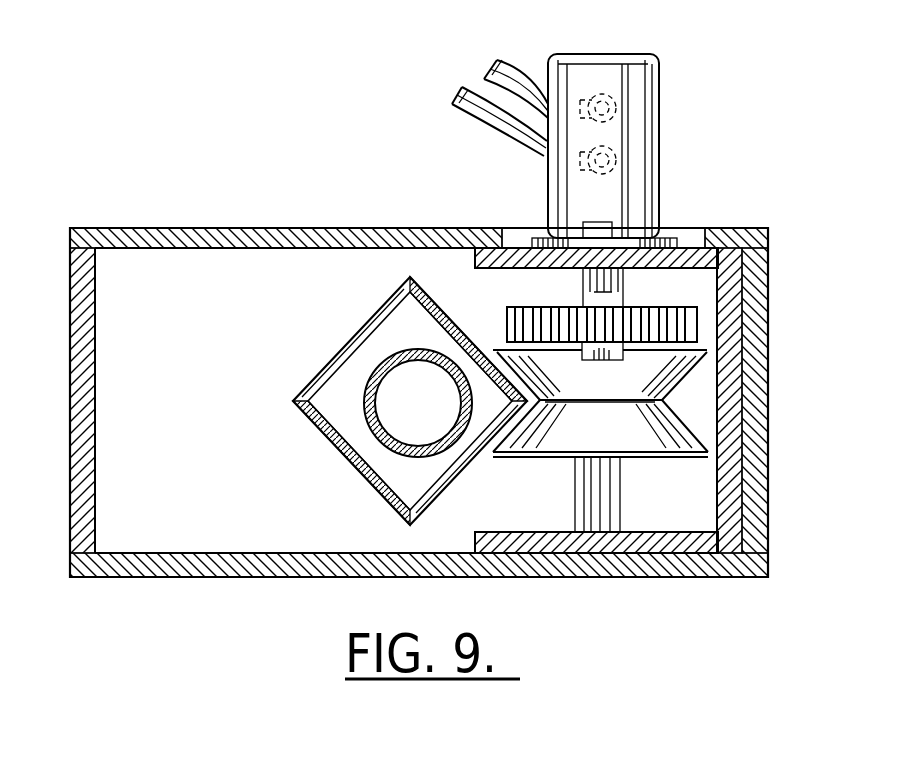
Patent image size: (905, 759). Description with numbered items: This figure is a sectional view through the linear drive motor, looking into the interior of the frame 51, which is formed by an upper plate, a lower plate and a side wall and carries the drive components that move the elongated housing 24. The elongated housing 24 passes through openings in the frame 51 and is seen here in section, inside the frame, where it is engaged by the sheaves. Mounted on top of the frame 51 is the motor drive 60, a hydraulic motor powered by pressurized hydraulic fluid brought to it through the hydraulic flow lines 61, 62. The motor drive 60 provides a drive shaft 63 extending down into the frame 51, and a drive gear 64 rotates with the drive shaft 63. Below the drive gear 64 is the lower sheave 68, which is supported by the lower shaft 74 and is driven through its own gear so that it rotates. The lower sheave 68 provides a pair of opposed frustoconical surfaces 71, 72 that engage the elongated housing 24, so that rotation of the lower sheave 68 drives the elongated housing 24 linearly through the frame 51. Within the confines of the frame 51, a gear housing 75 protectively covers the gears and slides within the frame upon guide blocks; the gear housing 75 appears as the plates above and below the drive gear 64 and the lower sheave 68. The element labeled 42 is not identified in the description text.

The elongated housing 24 is at (340, 455).
The bearing ring 42 is at (380, 370).
The frame 51 is at (128, 236).
The motor drive 60 is at (658, 84).
The hydraulic flow line 61 is at (512, 97).
The hydraulic flow line 62 is at (544, 150).
The drive shaft 63 is at (625, 285).
The drive gear 64 is at (700, 323).
The lower sheave 68 is at (548, 462).
The frustoconical surface 71 is at (647, 390).
The frustoconical surface 72 is at (680, 428).
The lower shaft 74 is at (620, 495).
The gear housing 75 is at (478, 254).